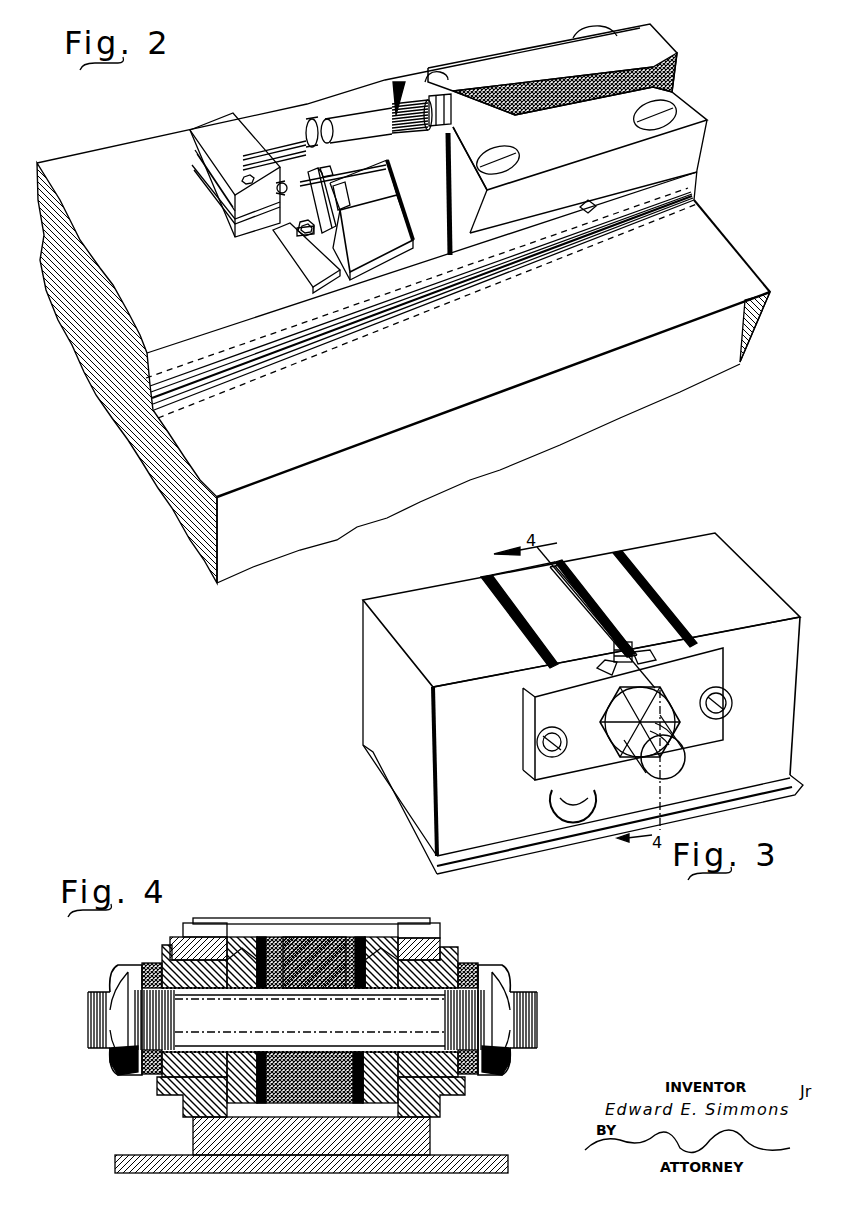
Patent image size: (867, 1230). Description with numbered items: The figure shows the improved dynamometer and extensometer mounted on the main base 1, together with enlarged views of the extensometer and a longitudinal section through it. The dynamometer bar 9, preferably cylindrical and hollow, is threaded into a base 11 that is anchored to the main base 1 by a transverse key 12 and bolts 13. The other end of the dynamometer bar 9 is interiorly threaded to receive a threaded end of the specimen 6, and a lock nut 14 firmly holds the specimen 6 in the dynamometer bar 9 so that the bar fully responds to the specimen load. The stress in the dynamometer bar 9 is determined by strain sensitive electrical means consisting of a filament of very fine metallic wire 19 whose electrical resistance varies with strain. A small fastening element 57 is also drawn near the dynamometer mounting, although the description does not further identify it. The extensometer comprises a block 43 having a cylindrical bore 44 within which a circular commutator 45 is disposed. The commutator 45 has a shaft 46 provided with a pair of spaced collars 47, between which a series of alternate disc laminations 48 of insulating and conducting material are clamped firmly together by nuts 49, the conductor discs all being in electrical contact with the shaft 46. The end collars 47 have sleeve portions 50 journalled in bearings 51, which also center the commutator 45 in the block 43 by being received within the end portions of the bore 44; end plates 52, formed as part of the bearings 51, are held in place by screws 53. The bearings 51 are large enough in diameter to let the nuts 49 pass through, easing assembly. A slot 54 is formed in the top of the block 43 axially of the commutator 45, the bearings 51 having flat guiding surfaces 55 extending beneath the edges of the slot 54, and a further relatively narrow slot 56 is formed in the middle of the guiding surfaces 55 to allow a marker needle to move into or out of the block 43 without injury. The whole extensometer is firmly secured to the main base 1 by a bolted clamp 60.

In FIG. 2, the main base 1 is at (403, 305).
In FIG. 2, the specimen 6 is at (281, 152).
In FIG. 2, the dynamometer bar 9 is at (362, 128).
In FIG. 2, the base 11 is at (562, 133).
In FIG. 2, the transverse key 12 is at (592, 203).
In FIG. 2, the bolts 13 is at (466, 74).
In FIG. 2, the lock nut 14 is at (315, 128).
In FIG. 2, the fine metallic wire 19 is at (431, 138).
In FIG. 2, the block 43 is at (371, 257).
In FIG. 3, the block 43 is at (745, 586).
In FIG. 4, the block 43 is at (200, 1140).
In FIG. 4, the cylindrical bore 44 is at (302, 927).
In FIG. 4, the circular commutator 45 is at (340, 937).
In FIG. 2, the shaft 46 is at (282, 195).
In FIG. 3, the shaft 46 is at (648, 762).
In FIG. 4, the shaft 46 is at (533, 1013).
In FIG. 4, the collars 47 is at (240, 940).
In FIG. 4, the disc laminations 48 is at (262, 937).
In FIG. 2, the nuts 49 is at (305, 228).
In FIG. 3, the nuts 49 is at (612, 718).
In FIG. 4, the nuts 49 is at (123, 970).
In FIG. 4, the sleeve portions 50 is at (180, 968).
In FIG. 2, the bearings 51 is at (358, 178).
In FIG. 4, the bearings 51 is at (200, 948).
In FIG. 2, the end plates 52 is at (345, 203).
In FIG. 3, the end plates 52 is at (530, 710).
In FIG. 4, the end plates 52 is at (157, 950).
In FIG. 3, the screws 53 is at (541, 748).
In FIG. 3, the slot 54 is at (596, 602).
In FIG. 3, the flat guiding surfaces 55 is at (650, 654).
In FIG. 3, the narrow slot 56 is at (628, 645).
In FIG. 2, the screw head 57 is at (250, 178).
In FIG. 2, the bolted clamp 60 is at (290, 262).